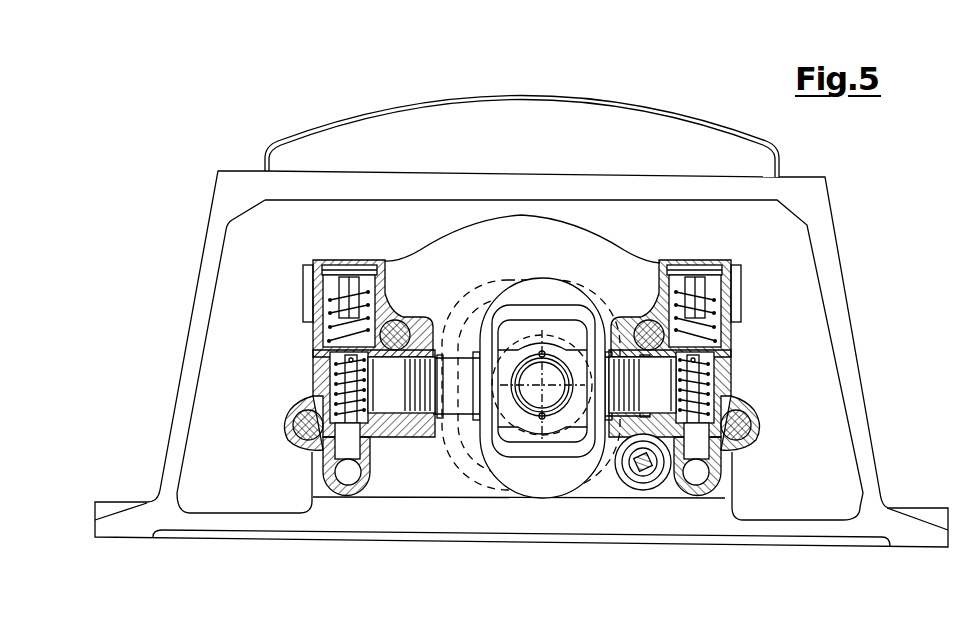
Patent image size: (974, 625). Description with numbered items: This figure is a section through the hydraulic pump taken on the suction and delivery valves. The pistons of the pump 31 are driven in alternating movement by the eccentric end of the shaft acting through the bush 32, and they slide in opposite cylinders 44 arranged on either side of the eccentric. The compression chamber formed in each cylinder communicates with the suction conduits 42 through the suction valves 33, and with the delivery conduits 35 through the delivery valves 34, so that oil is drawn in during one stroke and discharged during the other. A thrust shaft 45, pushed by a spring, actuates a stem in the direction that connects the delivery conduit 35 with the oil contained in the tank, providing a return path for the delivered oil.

The pistons of the pump 31 is at (582, 320).
The bush 32 is at (523, 420).
The suction valves 33 is at (742, 438).
The delivery valves 34 is at (732, 352).
The delivery conduits 35 is at (722, 305).
The suction conduits 42 is at (723, 470).
The opposite cylinders 44 is at (317, 377).
The thrust shaft 45 is at (648, 478).